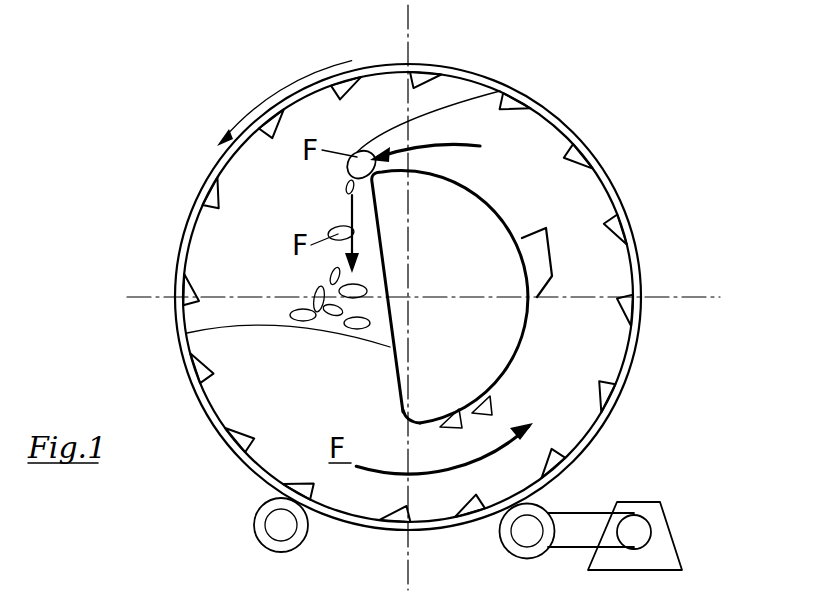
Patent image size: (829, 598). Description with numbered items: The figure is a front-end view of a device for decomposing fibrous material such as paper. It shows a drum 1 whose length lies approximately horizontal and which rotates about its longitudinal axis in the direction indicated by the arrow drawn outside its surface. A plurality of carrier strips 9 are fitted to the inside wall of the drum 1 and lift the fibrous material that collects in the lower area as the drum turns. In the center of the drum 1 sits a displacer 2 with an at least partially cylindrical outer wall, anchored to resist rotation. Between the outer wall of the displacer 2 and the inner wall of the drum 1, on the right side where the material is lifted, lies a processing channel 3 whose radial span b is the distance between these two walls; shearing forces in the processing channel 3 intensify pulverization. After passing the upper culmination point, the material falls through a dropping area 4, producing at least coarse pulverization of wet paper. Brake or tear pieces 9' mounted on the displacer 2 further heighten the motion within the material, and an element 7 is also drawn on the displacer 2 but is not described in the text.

The drum 1 is at (492, 83).
The displacer 2 is at (472, 273).
The processing channel 3 is at (582, 210).
The dropping area 4 is at (257, 233).
The vane 7 is at (542, 252).
The carrier strips 9 is at (440, 297).
The brake pieces or tear pieces 9' is at (465, 384).
The radial span b is at (540, 331).